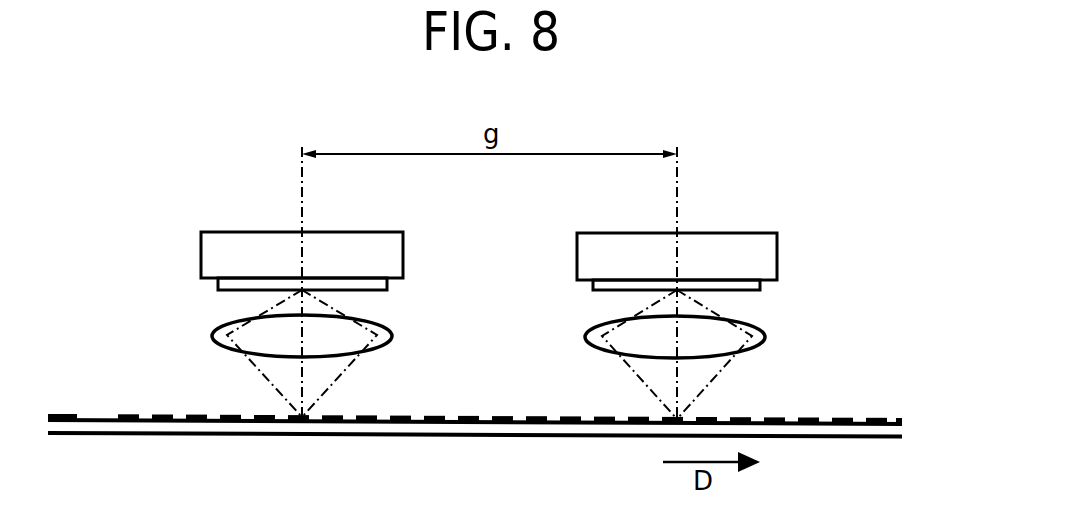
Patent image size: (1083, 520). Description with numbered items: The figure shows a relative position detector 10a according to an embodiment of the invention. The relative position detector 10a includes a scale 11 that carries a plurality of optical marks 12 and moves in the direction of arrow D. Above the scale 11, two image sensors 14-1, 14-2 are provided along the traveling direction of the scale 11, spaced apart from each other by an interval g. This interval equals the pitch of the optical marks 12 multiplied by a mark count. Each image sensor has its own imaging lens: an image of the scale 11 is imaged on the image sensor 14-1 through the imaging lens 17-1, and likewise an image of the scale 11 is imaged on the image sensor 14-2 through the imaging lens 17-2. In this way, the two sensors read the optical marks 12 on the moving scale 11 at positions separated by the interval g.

The relative position detector 10a is at (734, 118).
The image sensor 14-1 is at (777, 259).
The image sensor 14-2 is at (403, 258).
The imaging lens 17-1 is at (765, 337).
The imaging lens 17-2 is at (392, 336).
The optical marks 12 is at (532, 420).
The scale 11 is at (862, 430).